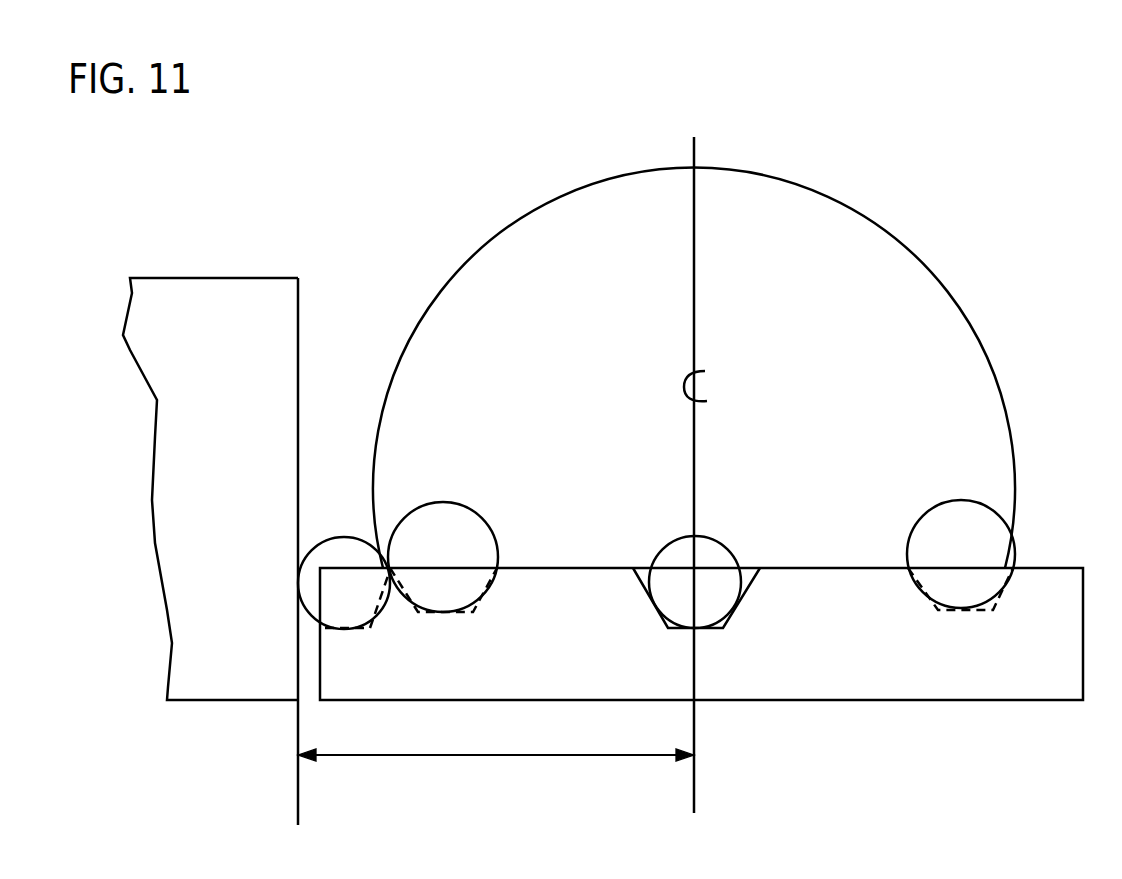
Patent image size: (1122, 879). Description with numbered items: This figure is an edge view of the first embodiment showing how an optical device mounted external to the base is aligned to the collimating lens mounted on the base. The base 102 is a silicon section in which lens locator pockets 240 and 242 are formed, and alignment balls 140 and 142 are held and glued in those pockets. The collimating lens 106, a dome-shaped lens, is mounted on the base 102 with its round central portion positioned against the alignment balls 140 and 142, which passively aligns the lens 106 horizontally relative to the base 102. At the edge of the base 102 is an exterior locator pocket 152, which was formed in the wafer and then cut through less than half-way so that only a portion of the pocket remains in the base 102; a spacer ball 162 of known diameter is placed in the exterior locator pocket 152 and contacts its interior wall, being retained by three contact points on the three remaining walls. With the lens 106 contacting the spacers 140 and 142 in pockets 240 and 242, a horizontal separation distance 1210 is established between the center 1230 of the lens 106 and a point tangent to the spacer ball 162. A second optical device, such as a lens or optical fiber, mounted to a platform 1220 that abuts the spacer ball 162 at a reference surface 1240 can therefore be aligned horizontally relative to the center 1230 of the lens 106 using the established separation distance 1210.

The base 102 is at (823, 700).
The collimating lens 106 is at (907, 253).
The alignment ball 140 is at (441, 530).
The alignment ball 142 is at (970, 528).
The spacer ball 162 is at (340, 538).
The exterior locator pocket 152 is at (371, 632).
The lens locator pocket 240 is at (475, 605).
The lens locator pocket 242 is at (935, 607).
The horizontal separation distance 1210 is at (582, 757).
The platform 1220 is at (182, 278).
The center of lens 1230 is at (697, 237).
The reference surface 1240 is at (300, 727).